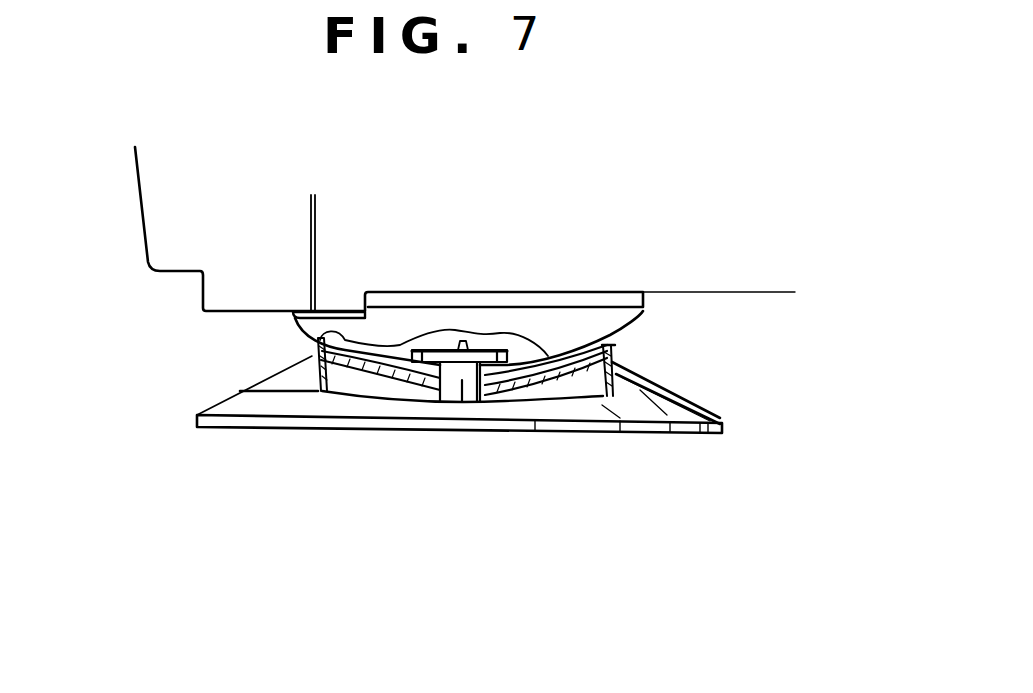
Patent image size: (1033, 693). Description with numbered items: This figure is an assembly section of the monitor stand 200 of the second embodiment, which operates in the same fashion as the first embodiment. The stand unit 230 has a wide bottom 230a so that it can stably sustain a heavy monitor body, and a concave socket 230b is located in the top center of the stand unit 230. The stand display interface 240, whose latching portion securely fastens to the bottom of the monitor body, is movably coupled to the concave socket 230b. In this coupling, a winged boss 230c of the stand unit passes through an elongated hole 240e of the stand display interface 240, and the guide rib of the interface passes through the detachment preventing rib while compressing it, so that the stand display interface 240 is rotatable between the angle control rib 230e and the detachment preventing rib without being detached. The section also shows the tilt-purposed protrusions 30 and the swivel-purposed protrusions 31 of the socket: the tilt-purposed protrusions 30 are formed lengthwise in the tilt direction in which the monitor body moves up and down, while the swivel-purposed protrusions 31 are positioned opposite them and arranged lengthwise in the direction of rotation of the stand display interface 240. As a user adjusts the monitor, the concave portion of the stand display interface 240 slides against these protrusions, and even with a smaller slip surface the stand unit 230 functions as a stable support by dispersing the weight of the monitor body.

The stand 200 is at (355, 478).
The tilt-purposed protrusions 30 is at (312, 346).
The swivel-purposed protrusions 31 is at (610, 343).
The stand unit 230 is at (722, 417).
The wide bottom 230a is at (640, 402).
The concave socket 230b is at (333, 330).
The winged boss 230c is at (510, 384).
The angle control rib 230e is at (552, 380).
The stand display interface 240 is at (643, 313).
The elongated hole 240e is at (425, 366).